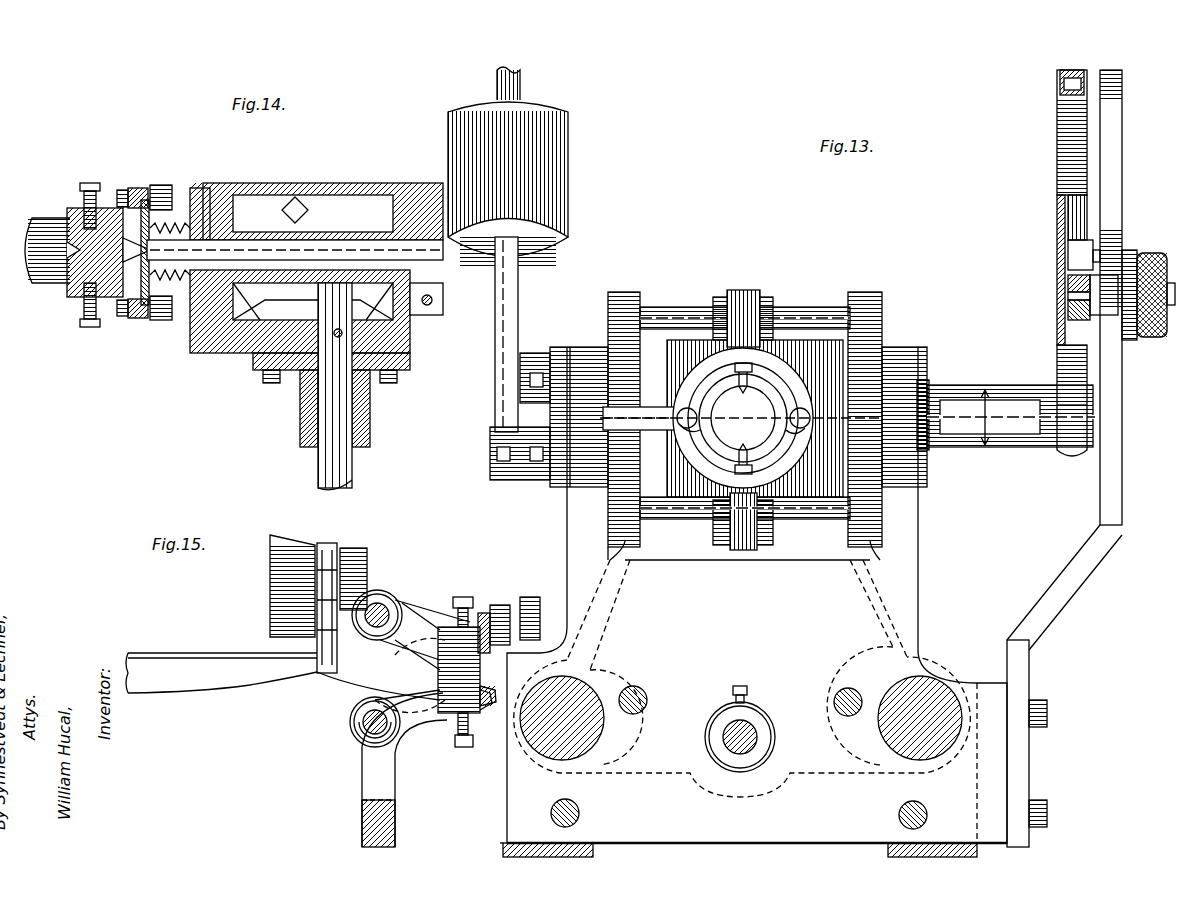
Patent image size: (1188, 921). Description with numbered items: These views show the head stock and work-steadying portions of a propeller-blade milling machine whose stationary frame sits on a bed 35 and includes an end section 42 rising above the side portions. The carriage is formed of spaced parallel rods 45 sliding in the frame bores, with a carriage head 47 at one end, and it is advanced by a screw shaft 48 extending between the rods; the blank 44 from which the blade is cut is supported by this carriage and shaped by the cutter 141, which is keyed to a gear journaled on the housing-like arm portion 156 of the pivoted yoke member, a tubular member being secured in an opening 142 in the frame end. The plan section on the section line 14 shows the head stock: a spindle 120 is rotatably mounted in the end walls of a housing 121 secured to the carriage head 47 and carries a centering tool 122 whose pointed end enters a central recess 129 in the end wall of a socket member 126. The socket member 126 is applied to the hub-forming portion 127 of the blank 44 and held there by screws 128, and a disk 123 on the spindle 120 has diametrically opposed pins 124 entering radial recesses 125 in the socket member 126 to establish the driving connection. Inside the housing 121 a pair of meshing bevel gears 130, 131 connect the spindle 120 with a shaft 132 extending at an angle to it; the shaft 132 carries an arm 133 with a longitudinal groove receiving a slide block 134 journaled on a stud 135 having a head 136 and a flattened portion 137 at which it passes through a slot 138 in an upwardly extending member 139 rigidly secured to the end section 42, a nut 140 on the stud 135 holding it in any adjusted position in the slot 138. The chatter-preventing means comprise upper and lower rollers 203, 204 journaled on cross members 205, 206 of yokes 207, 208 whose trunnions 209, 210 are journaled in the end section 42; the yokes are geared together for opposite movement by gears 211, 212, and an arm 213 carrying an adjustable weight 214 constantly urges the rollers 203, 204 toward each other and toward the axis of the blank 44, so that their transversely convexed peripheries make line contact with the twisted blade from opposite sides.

In FIG. 13, the section line 14 is at (999, 417).
In FIG. 13, the bed 35 is at (945, 845).
In FIG. 15, the bed 35 is at (505, 850).
In FIG. 13, the end section 42 is at (757, 591).
In FIG. 15, the end section 42 is at (362, 822).
In FIG. 15, the blank 44 is at (165, 665).
In FIG. 13, the rods 45 is at (575, 695).
In FIG. 13, the carriage head 47 is at (695, 505).
In FIG. 13, the screw shaft 48 is at (745, 742).
In FIG. 14, the spindle 120 is at (332, 235).
In FIG. 14, the housing 121 is at (250, 190).
In FIG. 14, the centering tool 122 is at (178, 262).
In FIG. 14, the disk 123 is at (165, 188).
In FIG. 13, the disk 123 is at (705, 455).
In FIG. 15, the disk 123 is at (530, 597).
In FIG. 14, the pins 124 is at (140, 190).
In FIG. 13, the pins 124 is at (679, 413).
In FIG. 15, the pins 124 is at (500, 605).
In FIG. 14, the radial recesses 125 is at (124, 192).
In FIG. 13, the radial recesses 125 is at (682, 426).
In FIG. 14, the socket member 126 is at (122, 302).
In FIG. 13, the socket member 126 is at (712, 392).
In FIG. 15, the socket member 126 is at (484, 613).
In FIG. 14, the hub-forming portion 127 is at (48, 232).
In FIG. 13, the hub-forming portion 127 is at (741, 418).
In FIG. 14, the screws 128 is at (80, 192).
In FIG. 13, the screws 128 is at (760, 372).
In FIG. 15, the screws 128 is at (462, 597).
In FIG. 14, the central recess 129 is at (108, 252).
In FIG. 14, the bevel gear 130 is at (295, 197).
In FIG. 14, the bevel gear 131 is at (433, 300).
In FIG. 14, the shaft 132 is at (330, 398).
In FIG. 13, the shaft 132 is at (968, 398).
In FIG. 13, the arm 133 is at (1062, 205).
In FIG. 13, the slide block 134 is at (1075, 218).
In FIG. 13, the stud 135 is at (1105, 300).
In FIG. 13, the head 136 is at (1093, 263).
In FIG. 13, the flattened portion 137 is at (1085, 316).
In FIG. 13, the slot 138 is at (1112, 250).
In FIG. 13, the upwardly extending member 139 is at (1068, 584).
In FIG. 13, the nut 140 is at (1152, 338).
In FIG. 15, the cutter 141 is at (380, 690).
In FIG. 13, the opening 142 is at (990, 773).
In FIG. 15, the arm portion 156 is at (282, 565).
In FIG. 13, the upper roller 203 is at (742, 290).
In FIG. 15, the upper roller 203 is at (385, 597).
In FIG. 13, the lower roller 204 is at (742, 552).
In FIG. 15, the lower roller 204 is at (372, 735).
In FIG. 13, the cross member 205 is at (800, 310).
In FIG. 15, the cross member 205 is at (398, 604).
In FIG. 13, the cross member 206 is at (800, 520).
In FIG. 15, the cross member 206 is at (350, 722).
In FIG. 13, the yoke 207 is at (641, 283).
In FIG. 15, the yoke 207 is at (427, 656).
In FIG. 13, the yoke 208 is at (612, 497).
In FIG. 15, the yoke 208 is at (480, 700).
In FIG. 13, the trunnions 209 is at (585, 347).
In FIG. 15, the trunnions 209 is at (419, 652).
In FIG. 13, the trunnions 210 is at (608, 497).
In FIG. 15, the trunnions 210 is at (410, 689).
In FIG. 13, the gear 211 is at (548, 352).
In FIG. 13, the gear 212 is at (560, 460).
In FIG. 13, the arm 213 is at (510, 300).
In FIG. 15, the arm 213 is at (484, 706).
In FIG. 13, the weight 214 is at (552, 158).